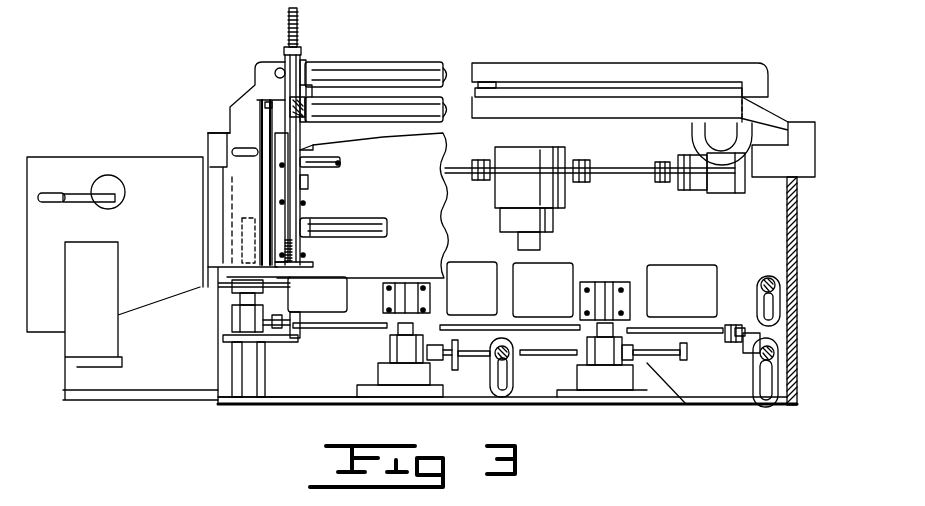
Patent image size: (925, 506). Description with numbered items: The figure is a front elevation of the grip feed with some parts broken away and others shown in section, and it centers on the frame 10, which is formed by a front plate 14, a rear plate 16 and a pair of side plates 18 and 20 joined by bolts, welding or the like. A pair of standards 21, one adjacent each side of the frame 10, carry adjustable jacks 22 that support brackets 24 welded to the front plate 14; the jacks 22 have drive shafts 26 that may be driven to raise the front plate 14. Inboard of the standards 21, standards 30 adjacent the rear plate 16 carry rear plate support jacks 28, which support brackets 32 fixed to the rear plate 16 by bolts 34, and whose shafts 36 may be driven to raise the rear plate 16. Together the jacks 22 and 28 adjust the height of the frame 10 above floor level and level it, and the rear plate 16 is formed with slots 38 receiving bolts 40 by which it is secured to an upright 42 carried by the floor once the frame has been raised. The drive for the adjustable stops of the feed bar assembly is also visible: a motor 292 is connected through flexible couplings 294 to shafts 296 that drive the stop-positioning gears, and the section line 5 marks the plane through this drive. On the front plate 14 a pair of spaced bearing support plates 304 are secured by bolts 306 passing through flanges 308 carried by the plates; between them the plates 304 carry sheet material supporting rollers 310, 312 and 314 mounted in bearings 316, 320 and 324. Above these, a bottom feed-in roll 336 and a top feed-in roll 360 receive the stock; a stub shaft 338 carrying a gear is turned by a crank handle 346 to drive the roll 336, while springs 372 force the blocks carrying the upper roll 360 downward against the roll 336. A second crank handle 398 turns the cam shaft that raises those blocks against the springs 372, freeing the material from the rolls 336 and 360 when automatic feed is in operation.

The section line 5— 5 is at (722, 78).
The frame 10 is at (698, 418).
The front plate 14 is at (440, 243).
The rear plate 16 is at (337, 390).
The side plate 18 is at (215, 365).
The side plate 20 is at (788, 272).
The standard 21 is at (262, 373).
The adjustable jack 22 is at (227, 322).
The bracket 24 is at (230, 267).
The drive shaft 26 is at (313, 328).
The rear plate support jack 28 is at (390, 343).
The standard 30 is at (430, 387).
The bracket 32 is at (447, 305).
The bolt 34 is at (443, 290).
The shaft 36 is at (465, 360).
The slot 38 is at (495, 398).
The bolt 40 is at (508, 352).
The upright 42 is at (657, 387).
The motor 292 is at (560, 205).
The flexible coupling 294 is at (485, 162).
The shaft 296 is at (462, 160).
The bearing support plate 304 is at (282, 202).
The bolt 306 is at (282, 165).
The flange 308 is at (88, 186).
The sheet material supporting roller 310 is at (353, 220).
The sheet material supporting roller 312 is at (340, 163).
The sheet material supporting roller 314 is at (330, 112).
The bearing 316 is at (297, 240).
The bearing 320 is at (307, 183).
The bearing 324 is at (305, 118).
The bottom feed-in roll 336 is at (383, 138).
The stub shaft 338 is at (290, 72).
The crank handle 346 is at (252, 113).
The top feed-in roll 360 is at (412, 65).
The spring 372 is at (300, 47).
The crank handle 398 is at (283, 66).